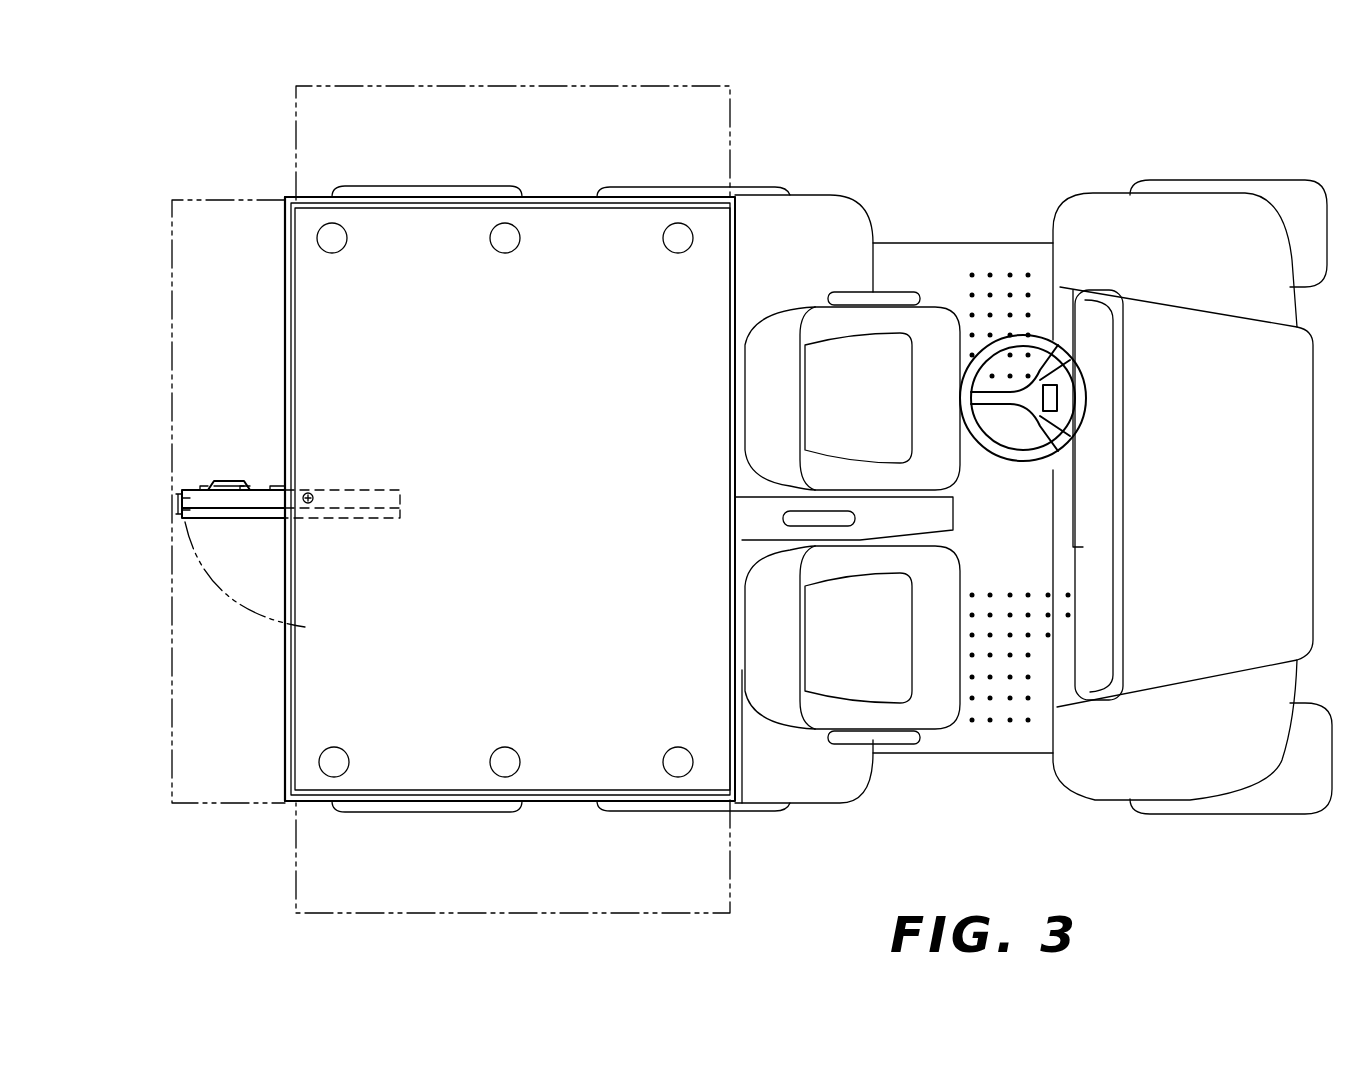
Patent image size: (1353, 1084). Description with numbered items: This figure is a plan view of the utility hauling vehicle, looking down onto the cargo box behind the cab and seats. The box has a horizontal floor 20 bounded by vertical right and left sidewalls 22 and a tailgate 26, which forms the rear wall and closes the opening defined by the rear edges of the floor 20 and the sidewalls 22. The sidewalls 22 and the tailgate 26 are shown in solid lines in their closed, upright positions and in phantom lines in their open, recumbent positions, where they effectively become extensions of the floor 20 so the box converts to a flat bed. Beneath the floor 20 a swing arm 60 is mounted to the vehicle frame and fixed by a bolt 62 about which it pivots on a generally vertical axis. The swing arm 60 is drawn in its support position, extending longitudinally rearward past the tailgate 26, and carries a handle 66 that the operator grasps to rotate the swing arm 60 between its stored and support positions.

The floor 20 is at (607, 494).
The sidewalls 22 is at (408, 208).
The tailgate 26 is at (297, 378).
The swing arm 60 is at (150, 500).
The bolt 62 is at (310, 492).
The handle 66 is at (231, 481).